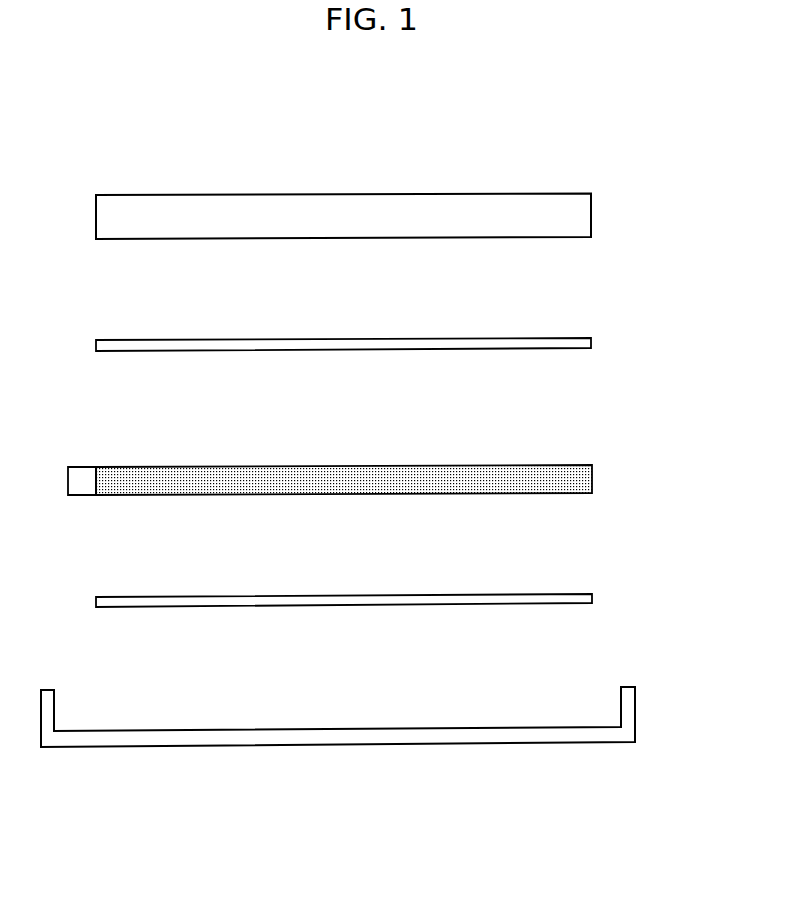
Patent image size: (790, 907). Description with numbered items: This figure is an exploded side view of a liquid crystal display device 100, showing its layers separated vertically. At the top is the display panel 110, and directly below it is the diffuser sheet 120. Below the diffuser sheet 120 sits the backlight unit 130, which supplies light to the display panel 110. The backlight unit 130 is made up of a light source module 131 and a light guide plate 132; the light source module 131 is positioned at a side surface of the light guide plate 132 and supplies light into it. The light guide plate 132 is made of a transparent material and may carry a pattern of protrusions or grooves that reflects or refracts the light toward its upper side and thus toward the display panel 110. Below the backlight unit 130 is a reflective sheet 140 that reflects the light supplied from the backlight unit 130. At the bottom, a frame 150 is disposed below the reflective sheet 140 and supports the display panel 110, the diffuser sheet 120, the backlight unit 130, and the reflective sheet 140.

The liquid crystal display device 100 is at (386, 164).
The display panel 110 is at (591, 214).
The diffuser sheet 120 is at (591, 343).
The backlight unit 130 is at (329, 438).
The light source module 131 is at (85, 468).
The light guide plate 132 is at (344, 459).
The reflective sheet 140 is at (592, 599).
The frame 150 is at (635, 712).